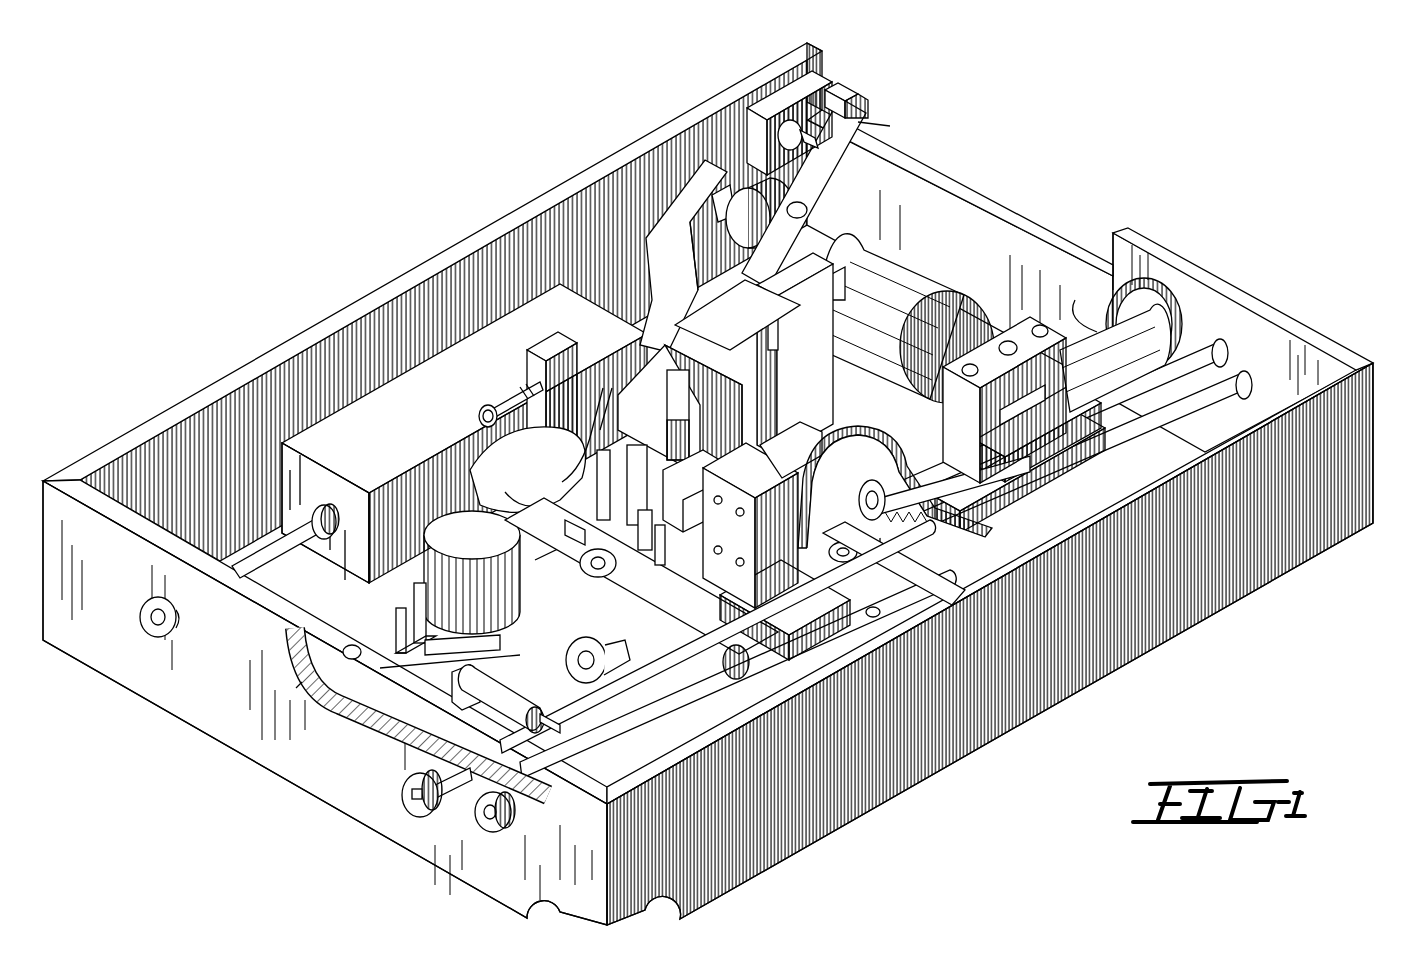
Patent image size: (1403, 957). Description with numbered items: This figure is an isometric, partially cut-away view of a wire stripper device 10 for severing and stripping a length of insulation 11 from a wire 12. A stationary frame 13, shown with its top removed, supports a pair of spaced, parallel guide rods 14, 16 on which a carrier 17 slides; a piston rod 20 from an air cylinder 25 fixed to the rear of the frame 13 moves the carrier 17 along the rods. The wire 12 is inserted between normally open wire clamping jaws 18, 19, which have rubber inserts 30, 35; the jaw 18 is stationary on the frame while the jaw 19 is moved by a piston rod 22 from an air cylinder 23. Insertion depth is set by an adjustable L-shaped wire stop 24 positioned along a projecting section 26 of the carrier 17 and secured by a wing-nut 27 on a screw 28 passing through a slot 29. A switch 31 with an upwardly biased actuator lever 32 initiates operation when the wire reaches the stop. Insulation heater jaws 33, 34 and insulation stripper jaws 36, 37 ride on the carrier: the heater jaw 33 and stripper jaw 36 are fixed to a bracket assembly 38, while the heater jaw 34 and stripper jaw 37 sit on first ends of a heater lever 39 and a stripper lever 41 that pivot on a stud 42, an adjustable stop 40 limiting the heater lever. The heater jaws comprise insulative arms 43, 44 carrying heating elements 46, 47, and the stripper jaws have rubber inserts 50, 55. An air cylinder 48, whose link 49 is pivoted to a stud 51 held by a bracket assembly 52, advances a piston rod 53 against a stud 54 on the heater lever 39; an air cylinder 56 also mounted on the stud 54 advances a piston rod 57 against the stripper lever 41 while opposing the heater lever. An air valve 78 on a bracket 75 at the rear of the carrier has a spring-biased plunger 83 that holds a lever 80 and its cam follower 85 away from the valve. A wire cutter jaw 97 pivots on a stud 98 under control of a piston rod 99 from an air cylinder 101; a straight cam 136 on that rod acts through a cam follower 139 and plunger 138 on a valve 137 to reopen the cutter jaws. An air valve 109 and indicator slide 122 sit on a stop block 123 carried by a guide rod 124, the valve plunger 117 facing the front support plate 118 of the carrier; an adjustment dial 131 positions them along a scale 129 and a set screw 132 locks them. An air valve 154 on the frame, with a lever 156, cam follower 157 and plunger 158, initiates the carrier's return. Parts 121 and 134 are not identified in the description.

The wire stripper device 10 is at (395, 235).
The insulation 11 is at (300, 682).
The wire 12 is at (296, 702).
The stationary frame 13 is at (1040, 718).
The guide rod 14 is at (640, 716).
The guide rod 16 is at (270, 545).
The carrier 17 is at (376, 372).
The wire clamping jaw 18 is at (455, 660).
The wire clamping jaw 19 is at (415, 620).
The piston rod 20 is at (895, 491).
The piston rod 22 is at (527, 718).
The air cylinder 23 is at (500, 700).
The wire stop 24 is at (779, 358).
The air cylinder 25 is at (820, 488).
The projecting section 26 is at (830, 392).
The wing-nut 27 is at (776, 304).
The screw 28 is at (800, 308).
The slot 29 is at (772, 322).
The rubber insert 30 is at (478, 540).
The switch 31 is at (776, 510).
The actuator lever 32 is at (790, 472).
The insulation heater jaw 33 is at (648, 636).
The insulation heater jaw 34 is at (630, 405).
The rubber insert 35 is at (422, 600).
The insulation stripper jaw 36 is at (738, 505).
The insulation stripper jaw 37 is at (655, 392).
The bracket assembly 38 is at (770, 586).
The heater lever 39 is at (905, 164).
The adjustable stop 40 is at (792, 114).
The stripper lever 41 is at (652, 242).
The stud 42 is at (726, 330).
The insulative arms 43 is at (655, 575).
The insulative arms 44 is at (601, 392).
The heating element 46 is at (680, 510).
The heating element 47 is at (645, 532).
The air cylinder 48 is at (930, 405).
The link 49 is at (1010, 372).
The rubber insert 50 is at (668, 485).
The stud 51 is at (1009, 342).
The bracket assembly 52 is at (978, 470).
The piston rod 53 is at (850, 256).
The stud 54 is at (800, 205).
The rubber insert 55 is at (676, 446).
The air cylinder 56 is at (740, 246).
The piston rod 57 is at (682, 226).
The bracket 75 is at (892, 125).
The air valve 78 is at (872, 90).
The lever 80 is at (855, 88).
The plunger 83 is at (872, 110).
The cam follower 85 is at (858, 148).
The wire cutter jaw 97 is at (582, 495).
The stud 98 is at (592, 578).
The piston rod 99 is at (520, 503).
The air cylinder 101 is at (548, 588).
The air valve 109 is at (905, 585).
The plunger 117 is at (872, 616).
The front support plate 118 is at (846, 638).
The block 121 is at (455, 696).
The indicator slide 122 is at (770, 545).
The stop block 123 is at (848, 550).
The guide rod 124 is at (600, 706).
The scale 129 is at (992, 500).
The adjustment dial 131 is at (410, 795).
The set screw 132 is at (508, 798).
The cam plate 134 is at (540, 460).
The straight cam 136 is at (460, 448).
The valve 137 is at (552, 345).
The plunger 138 is at (508, 387).
The cam follower 139 is at (478, 408).
The air valve 154 is at (345, 733).
The lever 156 is at (300, 648).
The cam follower 157 is at (350, 646).
The plunger 158 is at (346, 714).